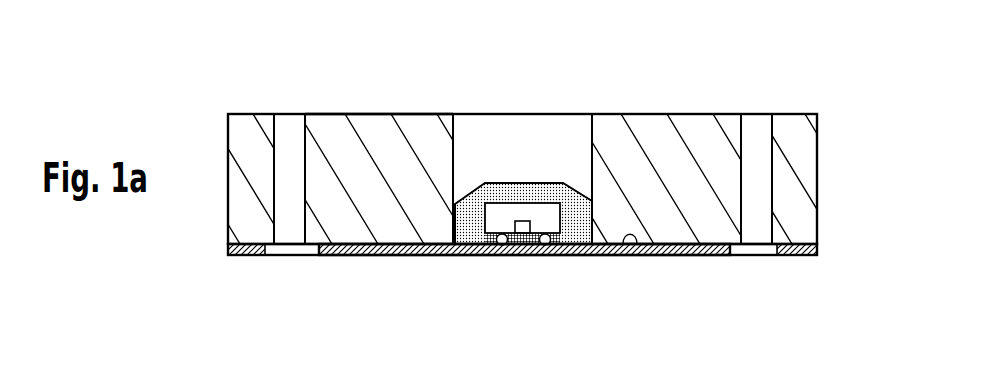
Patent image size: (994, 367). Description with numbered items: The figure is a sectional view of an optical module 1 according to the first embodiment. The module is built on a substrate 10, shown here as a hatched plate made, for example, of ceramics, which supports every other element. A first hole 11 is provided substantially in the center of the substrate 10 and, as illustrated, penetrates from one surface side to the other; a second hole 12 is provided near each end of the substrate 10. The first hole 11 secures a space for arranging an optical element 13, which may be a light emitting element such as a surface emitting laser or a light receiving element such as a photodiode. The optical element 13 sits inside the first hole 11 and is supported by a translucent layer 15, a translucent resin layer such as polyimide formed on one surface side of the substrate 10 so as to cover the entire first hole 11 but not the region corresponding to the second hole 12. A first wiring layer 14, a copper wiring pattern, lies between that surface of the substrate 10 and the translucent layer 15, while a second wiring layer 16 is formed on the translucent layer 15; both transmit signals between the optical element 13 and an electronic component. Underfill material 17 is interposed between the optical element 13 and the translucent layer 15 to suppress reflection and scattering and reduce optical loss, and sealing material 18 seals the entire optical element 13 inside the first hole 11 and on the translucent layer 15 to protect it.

The optical module 1 is at (819, 64).
The substrate 10 is at (808, 164).
The first hole 11 is at (469, 117).
The second hole 12 is at (289, 118).
The optical element 13 is at (539, 211).
The first wiring layer 14 is at (622, 252).
The translucent layer 15 is at (815, 248).
The second wiring layer 16 is at (696, 257).
The underfill material 17 is at (535, 257).
The sealing material 18 is at (465, 257).